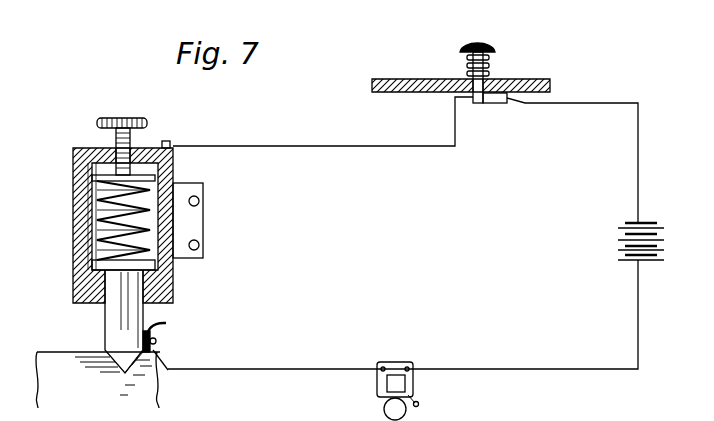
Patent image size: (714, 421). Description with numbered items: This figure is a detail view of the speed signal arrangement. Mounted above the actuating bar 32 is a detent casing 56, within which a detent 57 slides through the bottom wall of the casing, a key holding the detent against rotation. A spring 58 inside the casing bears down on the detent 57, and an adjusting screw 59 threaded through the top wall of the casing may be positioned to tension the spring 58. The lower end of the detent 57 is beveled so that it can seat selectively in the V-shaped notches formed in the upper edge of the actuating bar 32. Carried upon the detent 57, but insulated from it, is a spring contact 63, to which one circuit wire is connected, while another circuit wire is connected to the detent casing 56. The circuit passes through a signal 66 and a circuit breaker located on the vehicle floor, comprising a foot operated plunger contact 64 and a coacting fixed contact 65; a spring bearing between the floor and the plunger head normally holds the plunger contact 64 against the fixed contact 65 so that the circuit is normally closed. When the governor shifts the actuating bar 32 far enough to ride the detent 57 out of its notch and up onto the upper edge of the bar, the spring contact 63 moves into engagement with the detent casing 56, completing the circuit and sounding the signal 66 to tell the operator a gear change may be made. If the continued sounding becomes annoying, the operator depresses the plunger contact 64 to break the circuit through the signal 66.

The actuating bar 32 is at (95, 366).
The detent casing 56 is at (176, 282).
The detent 57 is at (143, 312).
The spring 58 is at (92, 225).
The adjusting screw 59 is at (132, 118).
The spring contact 63 is at (158, 340).
The foot operated plunger contact 64 is at (477, 103).
The fixed contact 65 is at (512, 86).
The signal 66 is at (400, 362).